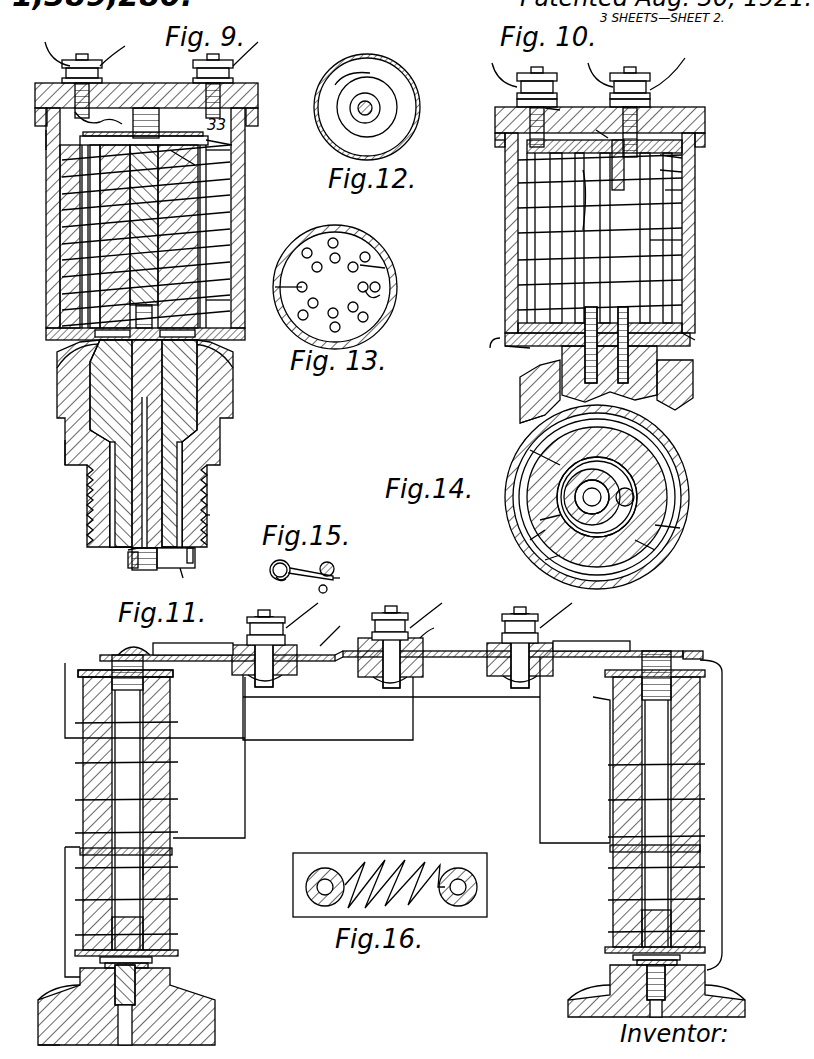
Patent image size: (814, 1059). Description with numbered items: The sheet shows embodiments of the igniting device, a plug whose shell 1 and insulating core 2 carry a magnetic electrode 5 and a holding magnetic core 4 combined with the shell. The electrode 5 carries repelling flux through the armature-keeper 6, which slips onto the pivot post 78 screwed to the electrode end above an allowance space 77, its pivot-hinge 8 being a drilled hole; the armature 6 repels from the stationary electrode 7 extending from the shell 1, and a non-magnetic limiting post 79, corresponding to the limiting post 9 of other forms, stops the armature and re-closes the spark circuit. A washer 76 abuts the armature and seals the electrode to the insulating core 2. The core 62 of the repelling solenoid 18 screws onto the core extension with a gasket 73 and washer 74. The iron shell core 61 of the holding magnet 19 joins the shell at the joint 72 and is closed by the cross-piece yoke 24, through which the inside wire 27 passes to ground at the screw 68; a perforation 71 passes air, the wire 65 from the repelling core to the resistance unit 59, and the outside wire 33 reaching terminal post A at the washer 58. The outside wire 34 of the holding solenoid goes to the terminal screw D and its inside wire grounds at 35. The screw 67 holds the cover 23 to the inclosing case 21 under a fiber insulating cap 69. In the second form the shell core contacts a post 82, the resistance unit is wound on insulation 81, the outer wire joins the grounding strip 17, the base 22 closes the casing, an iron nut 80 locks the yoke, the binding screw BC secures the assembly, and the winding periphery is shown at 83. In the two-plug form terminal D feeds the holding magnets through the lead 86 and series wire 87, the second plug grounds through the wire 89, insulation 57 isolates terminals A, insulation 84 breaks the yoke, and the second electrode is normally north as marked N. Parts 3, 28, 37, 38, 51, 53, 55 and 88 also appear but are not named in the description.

In FIG. 9, the shell 1 is at (57, 382).
In FIG. 10, the shell 1 is at (522, 410).
In FIG. 11, the shell 1 is at (38, 1010).
In FIG. 9, the insulating core 2 is at (100, 398).
In FIG. 10, the insulating core 2 is at (609, 376).
In FIG. 11, the insulating core 2 is at (40, 1040).
In FIG. 9, the shell body 3 is at (65, 442).
In FIG. 9, the holding magnetic core 4 is at (207, 534).
In FIG. 10, the holding magnetic core 4 is at (628, 356).
In FIG. 11, the holding magnetic core 4 is at (210, 1010).
In FIG. 9, the magnetic electrode 5 is at (132, 368).
In FIG. 10, the magnetic electrode 5 is at (587, 356).
In FIG. 15, the magnetic electrode 5 is at (270, 574).
In FIG. 11, the magnetic electrode 5 is at (172, 990).
In FIG. 9, the armature-keeper 6 is at (176, 558).
In FIG. 15, the armature-keeper 6 is at (340, 578).
In FIG. 9, the stationary electrode 7 is at (189, 577).
In FIG. 15, the stationary electrode 7 is at (334, 569).
In FIG. 9, the pivot-hinge 8 is at (128, 566).
In FIG. 15, the pivot-hinge 8 is at (310, 586).
In FIG. 11, the limiting post 9 is at (487, 624).
In FIG. 10, the grounding strip 17 is at (680, 368).
In FIG. 11, the grounding strip 17 is at (70, 980).
In FIG. 9, the repelling solenoid 18 is at (200, 258).
In FIG. 10, the repelling solenoid 18 is at (540, 323).
In FIG. 11, the repelling solenoid 18 is at (160, 915).
In FIG. 9, the holding magnet 19 is at (200, 312).
In FIG. 10, the holding magnet 19 is at (540, 280).
In FIG. 11, the holding magnet 19 is at (160, 784).
In FIG. 9, the inclosing case 21 is at (46, 160).
In FIG. 10, the inclosing case 21 is at (690, 214).
In FIG. 14, the inclosing case 21 is at (658, 436).
In FIG. 10, the base 22 is at (528, 348).
In FIG. 9, the cover 23 is at (256, 104).
In FIG. 12, the cover 23 is at (318, 118).
In FIG. 10, the cover 23 is at (705, 120).
In FIG. 9, the cross-piece yoke 24 is at (236, 142).
In FIG. 13, the cross-piece yoke 24 is at (332, 287).
In FIG. 10, the cross-piece yoke 24 is at (695, 144).
In FIG. 11, the cross-piece yoke 24 is at (322, 661).
In FIG. 9, the inside wire of the repelling solenoid 27 is at (70, 192).
In FIG. 13, the inside wire of the repelling solenoid 27 is at (303, 315).
In FIG. 14, the inside wire of the repelling solenoid 27 is at (538, 545).
In FIG. 11, the inside wire of the repelling solenoid 27 is at (172, 852).
In FIG. 10, the ring 28 is at (505, 341).
In FIG. 14, the ring 28 is at (530, 452).
In FIG. 9, the outside wire of the repelling solenoid 33 is at (206, 305).
In FIG. 13, the outside wire of the repelling solenoid 33 is at (380, 288).
In FIG. 10, the outside wire of the repelling solenoid 33 is at (565, 100).
In FIG. 14, the outside wire of the repelling solenoid 33 is at (540, 522).
In FIG. 11, the outside wire of the repelling solenoid 33 is at (65, 932).
In FIG. 9, the outside wire of the holding solenoid 34 is at (46, 136).
In FIG. 10, the outside wire of the holding solenoid 34 is at (695, 340).
In FIG. 11, the outside wire of the holding solenoid 34 is at (85, 656).
In FIG. 9, the inside wire ground connection 35 is at (232, 276).
In FIG. 10, the inside wire ground connection 35 is at (682, 192).
In FIG. 11, the inside wire ground connection 35 is at (173, 675).
In FIG. 9, the sleeve 37 is at (200, 168).
In FIG. 10, the sleeve 37 is at (602, 124).
In FIG. 14, the sleeve 37 is at (555, 560).
In FIG. 11, the sleeve 37 is at (160, 870).
In FIG. 10, the bottom plate 38 is at (525, 395).
In FIG. 11, the bottom plate 38 is at (160, 950).
In FIG. 9, the threaded stud 51 is at (230, 155).
In FIG. 10, the threaded stud 51 is at (665, 175).
In FIG. 14, the threaded stud 51 is at (660, 528).
In FIG. 11, the threaded stud 51 is at (150, 712).
In FIG. 9, the base plate 53 is at (156, 330).
In FIG. 10, the base plate 53 is at (530, 345).
In FIG. 11, the base plate 53 is at (591, 646).
In FIG. 11, the cap 55 is at (132, 652).
In FIG. 11, the insulation 57 is at (305, 656).
In FIG. 10, the washer 58 is at (500, 140).
In FIG. 9, the resistance unit 59 is at (108, 130).
In FIG. 12, the resistance unit 59 is at (397, 113).
In FIG. 10, the resistance unit 59 is at (690, 242).
In FIG. 16, the resistance unit 59 is at (391, 882).
In FIG. 11, the resistance unit 59 is at (193, 638).
In FIG. 9, the shell core 61 is at (205, 236).
In FIG. 13, the shell core 61 is at (388, 272).
In FIG. 10, the shell core 61 is at (550, 297).
In FIG. 14, the shell core 61 is at (640, 545).
In FIG. 11, the shell core 61 is at (130, 760).
In FIG. 9, the core of the repelling solenoid 62 is at (62, 246).
In FIG. 10, the core of the repelling solenoid 62 is at (505, 231).
In FIG. 14, the core of the repelling solenoid 62 is at (540, 510).
In FIG. 11, the core of the repelling solenoid 62 is at (130, 896).
In FIG. 13, the wire 65 is at (382, 296).
In FIG. 10, the wire 65 is at (596, 148).
In FIG. 12, the screw 67 is at (372, 104).
In FIG. 14, the screw 67 is at (645, 503).
In FIG. 9, the screw 68 is at (148, 82).
In FIG. 13, the fiber insulating cap 69 is at (385, 322).
In FIG. 10, the fiber insulating cap 69 is at (520, 186).
In FIG. 13, the perforation 71 is at (370, 256).
In FIG. 9, the joint 72 is at (233, 372).
In FIG. 9, the gasket 73 is at (112, 333).
In FIG. 11, the gasket 73 is at (148, 967).
In FIG. 9, the washer 74 is at (177, 333).
In FIG. 11, the washer 74 is at (152, 960).
In FIG. 9, the washer 76 is at (128, 551).
In FIG. 9, the allowance space 77 is at (140, 572).
In FIG. 15, the pivot post 78 is at (274, 589).
In FIG. 9, the limiting post 79 is at (193, 556).
In FIG. 15, the limiting post 79 is at (328, 590).
In FIG. 10, the iron nut 80 is at (663, 158).
In FIG. 10, the insulation 81 is at (510, 253).
In FIG. 14, the insulation 81 is at (660, 460).
In FIG. 10, the post 82 is at (625, 289).
In FIG. 14, the post 82 is at (634, 494).
In FIG. 14, the periphery of the repelling solenoid winding 83 is at (596, 540).
In FIG. 11, the insulation 84 is at (348, 651).
In FIG. 11, the lead 86 is at (352, 741).
In FIG. 11, the series wire 87 is at (455, 699).
In FIG. 11, the bracket 88 is at (246, 806).
In FIG. 11, the wire 89 is at (723, 720).
In FIG. 9, the terminal post A is at (196, 66).
In FIG. 10, the terminal post A is at (552, 82).
In FIG. 11, the terminal post A is at (275, 645).
In FIG. 9, the terminal screw D is at (92, 62).
In FIG. 11, the terminal screw D is at (402, 618).
In FIG. 10, the terminal post BC is at (636, 76).
In FIG. 9, the north polarity indication N is at (205, 517).